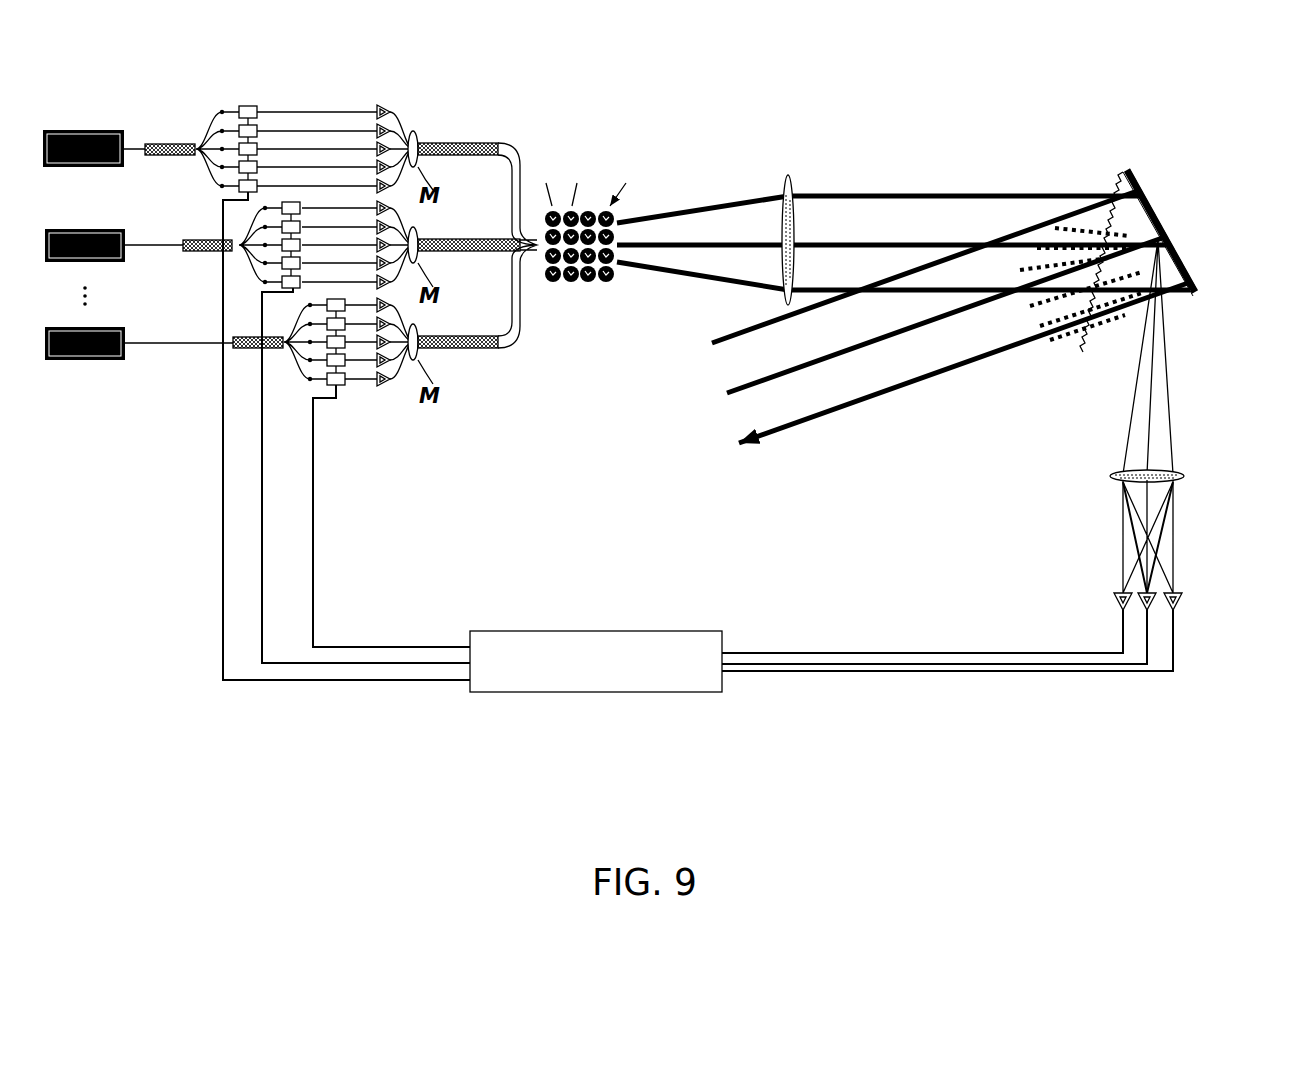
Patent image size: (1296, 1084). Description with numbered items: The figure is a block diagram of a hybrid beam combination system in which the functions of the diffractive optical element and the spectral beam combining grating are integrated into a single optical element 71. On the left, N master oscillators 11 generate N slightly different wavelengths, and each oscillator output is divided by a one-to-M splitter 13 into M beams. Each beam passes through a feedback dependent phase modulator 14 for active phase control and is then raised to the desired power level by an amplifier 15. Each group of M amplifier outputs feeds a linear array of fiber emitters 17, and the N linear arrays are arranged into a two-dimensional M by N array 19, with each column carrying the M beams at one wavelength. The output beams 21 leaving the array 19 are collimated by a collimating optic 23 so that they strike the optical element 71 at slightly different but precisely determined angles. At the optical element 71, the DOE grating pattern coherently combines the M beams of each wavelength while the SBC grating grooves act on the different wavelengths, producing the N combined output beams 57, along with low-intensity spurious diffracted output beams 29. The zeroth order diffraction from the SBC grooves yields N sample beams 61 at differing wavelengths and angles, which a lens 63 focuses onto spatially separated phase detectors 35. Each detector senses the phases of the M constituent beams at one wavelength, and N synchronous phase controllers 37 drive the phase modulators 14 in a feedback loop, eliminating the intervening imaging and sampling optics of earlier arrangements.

The master oscillators 11 is at (128, 102).
The 1:M splitters 13 is at (165, 156).
The phase modulator 14 is at (293, 186).
The amplifier 15 is at (398, 392).
The fiber emitters 17 is at (470, 143).
The M×N array 19 is at (616, 302).
The output beams 21 is at (722, 182).
The collimating optic 23 is at (790, 176).
The spurious diffracted output beams 29 is at (1113, 228).
The phase detectors 35 is at (1190, 604).
The phase controllers 37 is at (600, 694).
The combined beams 57 is at (953, 383).
The sample beams 61 is at (1187, 411).
The lens 63 is at (1185, 476).
The single optical element 71 is at (1130, 168).